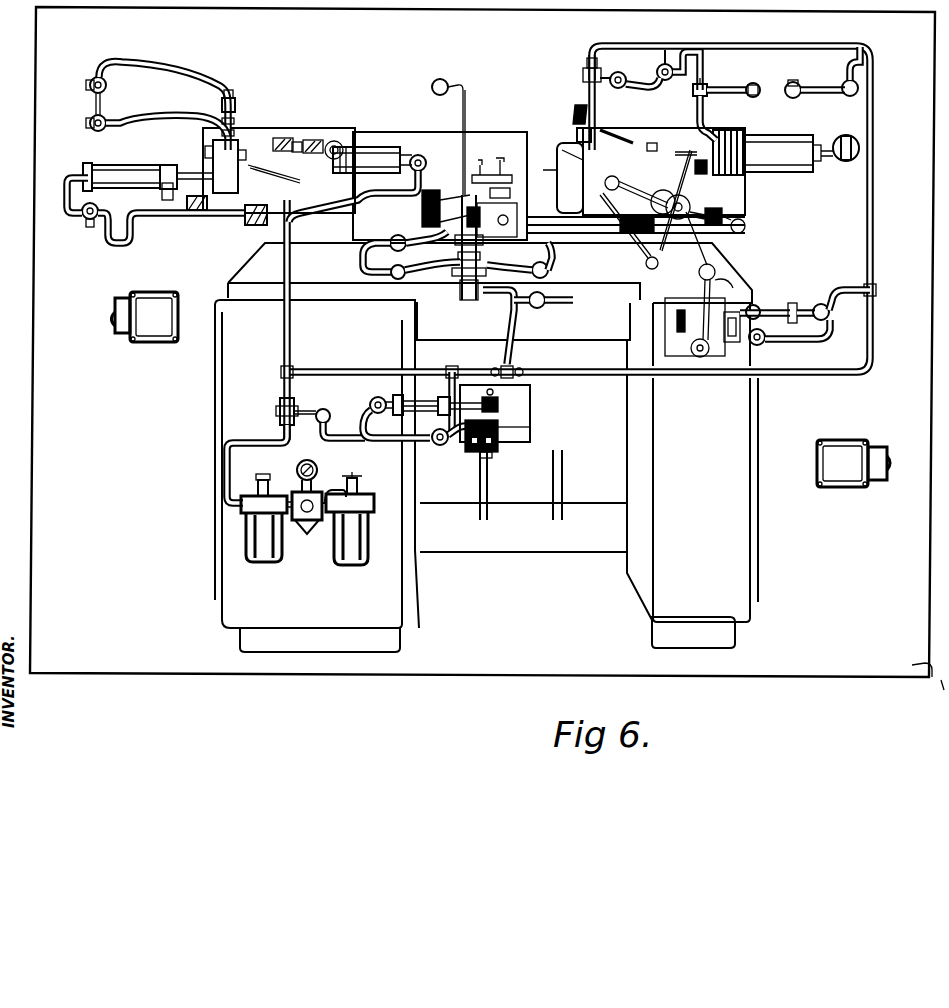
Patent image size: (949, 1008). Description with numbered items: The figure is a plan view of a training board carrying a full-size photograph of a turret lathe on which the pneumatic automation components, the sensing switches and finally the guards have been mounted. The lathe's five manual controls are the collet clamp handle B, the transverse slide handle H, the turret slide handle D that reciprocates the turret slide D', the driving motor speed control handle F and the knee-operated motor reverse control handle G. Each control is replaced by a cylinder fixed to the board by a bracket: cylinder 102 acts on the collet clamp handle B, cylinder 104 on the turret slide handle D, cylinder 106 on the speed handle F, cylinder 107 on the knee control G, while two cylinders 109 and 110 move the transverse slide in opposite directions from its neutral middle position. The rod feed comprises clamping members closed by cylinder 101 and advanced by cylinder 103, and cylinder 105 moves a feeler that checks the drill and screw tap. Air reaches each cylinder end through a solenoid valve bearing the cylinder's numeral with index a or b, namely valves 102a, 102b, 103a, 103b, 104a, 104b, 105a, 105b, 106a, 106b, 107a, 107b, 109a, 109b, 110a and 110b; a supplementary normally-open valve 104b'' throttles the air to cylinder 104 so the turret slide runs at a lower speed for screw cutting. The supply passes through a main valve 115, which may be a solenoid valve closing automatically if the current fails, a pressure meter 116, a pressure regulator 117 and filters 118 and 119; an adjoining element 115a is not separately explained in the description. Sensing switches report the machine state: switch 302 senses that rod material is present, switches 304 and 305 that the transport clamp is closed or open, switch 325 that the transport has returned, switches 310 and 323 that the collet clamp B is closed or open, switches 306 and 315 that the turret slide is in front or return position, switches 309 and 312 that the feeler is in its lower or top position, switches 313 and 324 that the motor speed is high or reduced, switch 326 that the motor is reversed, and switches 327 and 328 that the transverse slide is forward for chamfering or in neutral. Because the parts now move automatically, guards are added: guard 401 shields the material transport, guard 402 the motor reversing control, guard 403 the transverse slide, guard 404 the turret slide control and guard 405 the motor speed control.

The cylinder 101 is at (236, 104).
The cylinder 102 is at (390, 147).
The solenoid valve 102a is at (334, 212).
The solenoid valve 102b is at (425, 144).
The cylinder 103 is at (152, 164).
The solenoid valve 103a is at (104, 82).
The solenoid valve 103b is at (108, 130).
The cylinder 104 is at (806, 132).
The solenoid valve 104a is at (872, 72).
The solenoid valve 104b is at (726, 100).
The supplementary solenoid valve 104b'' is at (822, 80).
The cylinder 105 is at (584, 80).
The solenoid valve 105a is at (688, 44).
The solenoid valve 105b is at (619, 88).
The cylinder 106 is at (774, 306).
The solenoid valve 106a is at (838, 322).
The solenoid valve 106b is at (767, 342).
The cylinder 107 is at (418, 397).
The solenoid valve 107a is at (372, 398).
The solenoid valve 107b is at (445, 447).
The cylinder 109 is at (452, 300).
The solenoid valve 109a is at (560, 262).
The solenoid valve 109b is at (552, 305).
The cylinder 110 is at (480, 234).
The solenoid valve 110a is at (400, 235).
The solenoid valve 110b is at (393, 280).
The main valve 115 is at (276, 404).
The pipe 115a is at (348, 442).
The pressure meter 116 is at (316, 474).
The pressure regulator 117 is at (300, 532).
The filter 118 is at (268, 562).
The filter 119 is at (369, 558).
The switch 302 is at (240, 226).
The switch 304 is at (205, 150).
The switch 305 is at (334, 142).
The switch 306 is at (706, 176).
The switch 309 is at (577, 134).
The switch 310 is at (300, 138).
The switch 312 is at (575, 118).
The switch 313 is at (744, 343).
The switch 315 is at (660, 170).
The switch 323 is at (244, 122).
The switch 324 is at (699, 290).
The switch 325 is at (196, 212).
The switch 326 is at (500, 452).
The switch 327 is at (503, 192).
The switch 328 is at (494, 182).
The guard 401 is at (285, 132).
The guard 402 is at (533, 420).
The guard 403 is at (520, 132).
The guard 404 is at (655, 128).
The guard 405 is at (665, 343).
The collet clamp handle B is at (285, 160).
The turret slide handle D is at (644, 231).
The turret slide D' is at (559, 178).
The driving motor speed control handle F is at (729, 289).
The motor reverse control handle G is at (530, 440).
The transverse slide handle H is at (470, 82).